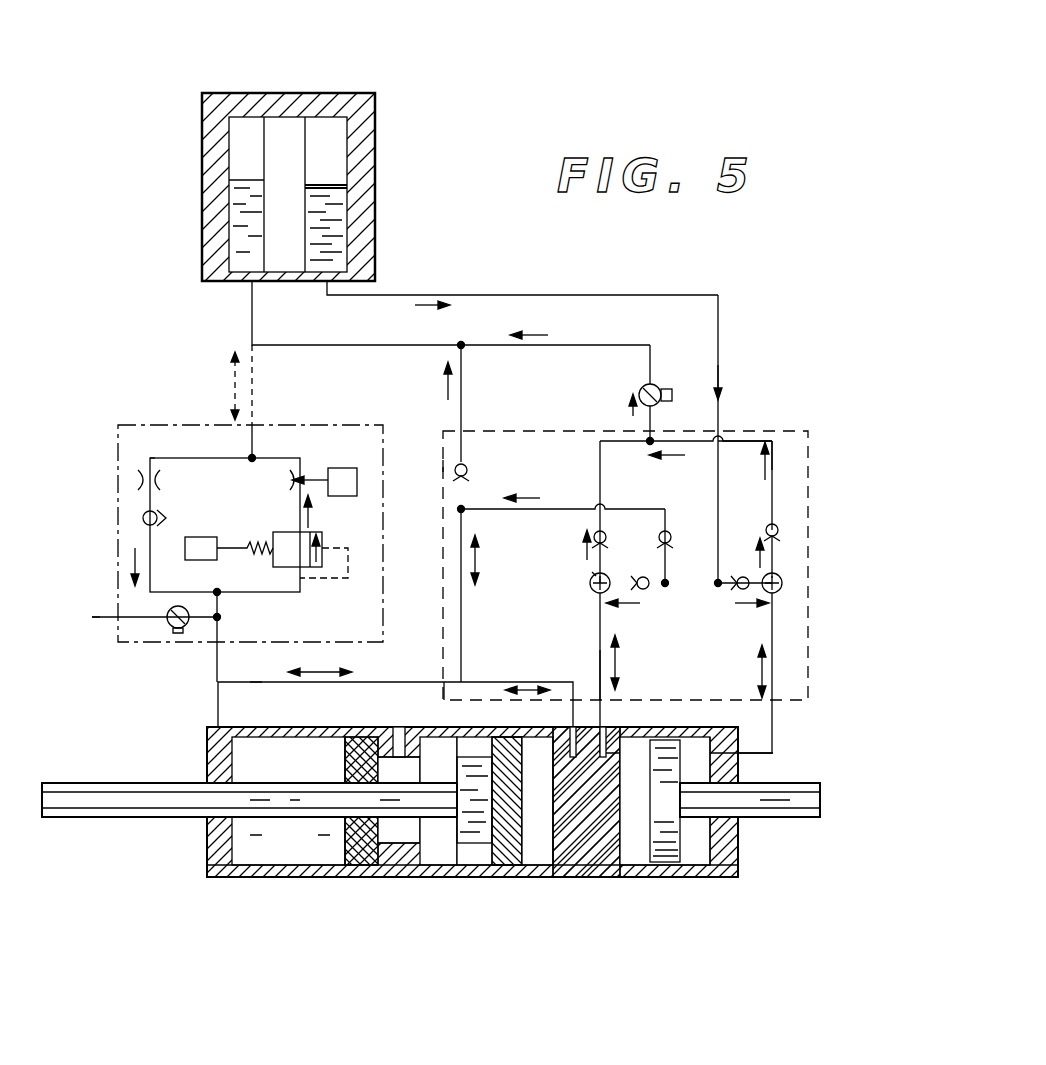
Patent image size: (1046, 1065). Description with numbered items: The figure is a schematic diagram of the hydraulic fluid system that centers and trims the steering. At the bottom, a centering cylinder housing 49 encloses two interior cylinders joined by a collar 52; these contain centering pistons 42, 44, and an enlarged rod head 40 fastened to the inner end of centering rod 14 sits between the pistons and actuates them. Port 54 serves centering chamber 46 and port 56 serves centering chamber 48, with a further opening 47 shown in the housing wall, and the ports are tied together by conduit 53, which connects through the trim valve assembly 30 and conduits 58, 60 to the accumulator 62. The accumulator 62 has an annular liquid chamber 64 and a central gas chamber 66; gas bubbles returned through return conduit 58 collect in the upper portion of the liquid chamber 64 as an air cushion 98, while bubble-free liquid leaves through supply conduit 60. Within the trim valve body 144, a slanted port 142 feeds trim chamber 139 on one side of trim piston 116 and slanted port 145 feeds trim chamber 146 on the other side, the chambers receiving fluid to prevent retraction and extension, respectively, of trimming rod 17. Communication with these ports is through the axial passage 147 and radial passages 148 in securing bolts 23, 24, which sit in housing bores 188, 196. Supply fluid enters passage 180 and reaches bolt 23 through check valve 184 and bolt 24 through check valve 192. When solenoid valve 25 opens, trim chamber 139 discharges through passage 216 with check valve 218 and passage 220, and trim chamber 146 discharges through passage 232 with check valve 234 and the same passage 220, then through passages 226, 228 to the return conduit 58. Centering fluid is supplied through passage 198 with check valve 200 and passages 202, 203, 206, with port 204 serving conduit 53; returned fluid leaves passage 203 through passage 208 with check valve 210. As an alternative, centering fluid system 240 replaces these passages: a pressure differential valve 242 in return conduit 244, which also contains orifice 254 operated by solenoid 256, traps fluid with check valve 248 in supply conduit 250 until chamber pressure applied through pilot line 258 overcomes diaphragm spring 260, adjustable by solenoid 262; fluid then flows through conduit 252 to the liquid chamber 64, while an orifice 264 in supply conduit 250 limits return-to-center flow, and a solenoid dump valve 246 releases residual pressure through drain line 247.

The centering rod 14 is at (112, 783).
The trimming rod 17 is at (768, 818).
The securing bolt 23 is at (590, 583).
The securing bolt 24 is at (786, 590).
The solenoid valve 25 is at (650, 384).
The trim valve assembly 30 is at (726, 337).
The rod head 40 is at (458, 736).
The centering piston 42 is at (347, 762).
The centering piston 44 is at (532, 866).
The centering chamber 46 is at (290, 835).
The port 47 is at (397, 728).
The centering chamber 48 is at (530, 850).
The centering cylinder housing 49 is at (302, 877).
The collar 52 is at (398, 845).
The conduit 53 is at (252, 682).
The port 54 is at (232, 752).
The port 56 is at (545, 752).
The return conduit 58 is at (372, 348).
The supply conduit 60 is at (470, 295).
The accumulator 62 is at (380, 186).
The liquid chamber 64 is at (240, 235).
The gas chamber 66 is at (270, 125).
The air cushion 98 is at (330, 125).
The trim piston 116 is at (700, 855).
The trim chamber 139 is at (668, 862).
The slanted port 142 is at (604, 662).
The trim valve body 144 is at (772, 430).
The slanted port 145 is at (810, 700).
The trim chamber 146 is at (720, 876).
The axial passage 147 is at (592, 572).
The radial passages 148 is at (600, 594).
The passage 180 is at (722, 467).
The check valve 184 is at (652, 592).
The housing bore 188 is at (594, 590).
The check valve 192 is at (738, 592).
The housing bore 196 is at (786, 582).
The passage 198 is at (604, 544).
The check valve 200 is at (652, 592).
The passage 202 is at (496, 509).
The passage 203 is at (463, 602).
The port 204 is at (448, 680).
The passage 206 is at (534, 692).
The passage 208 is at (464, 396).
The check valve 210 is at (441, 470).
The passage 216 is at (603, 462).
The check valve 218 is at (470, 470).
The passage 220 is at (718, 420).
The passage 226 is at (646, 356).
The passage 228 is at (518, 345).
The passage 232 is at (788, 462).
The check valve 234 is at (782, 530).
The alternate centering fluid system 240 is at (152, 423).
The pressure differential valve 242 is at (324, 538).
The return conduit 244 is at (262, 592).
The dump valve 246 is at (172, 628).
The drain line 247 is at (98, 620).
The check valve 248 is at (142, 518).
The supply conduit 250 is at (150, 462).
The inlet/outlet conduit 252 is at (256, 372).
The orifice 254 is at (290, 480).
The solenoid 256 is at (343, 468).
The pilot line 258 is at (352, 578).
The diaphragm spring 260 is at (250, 546).
The solenoid 262 is at (198, 560).
The orifice 264 is at (162, 478).